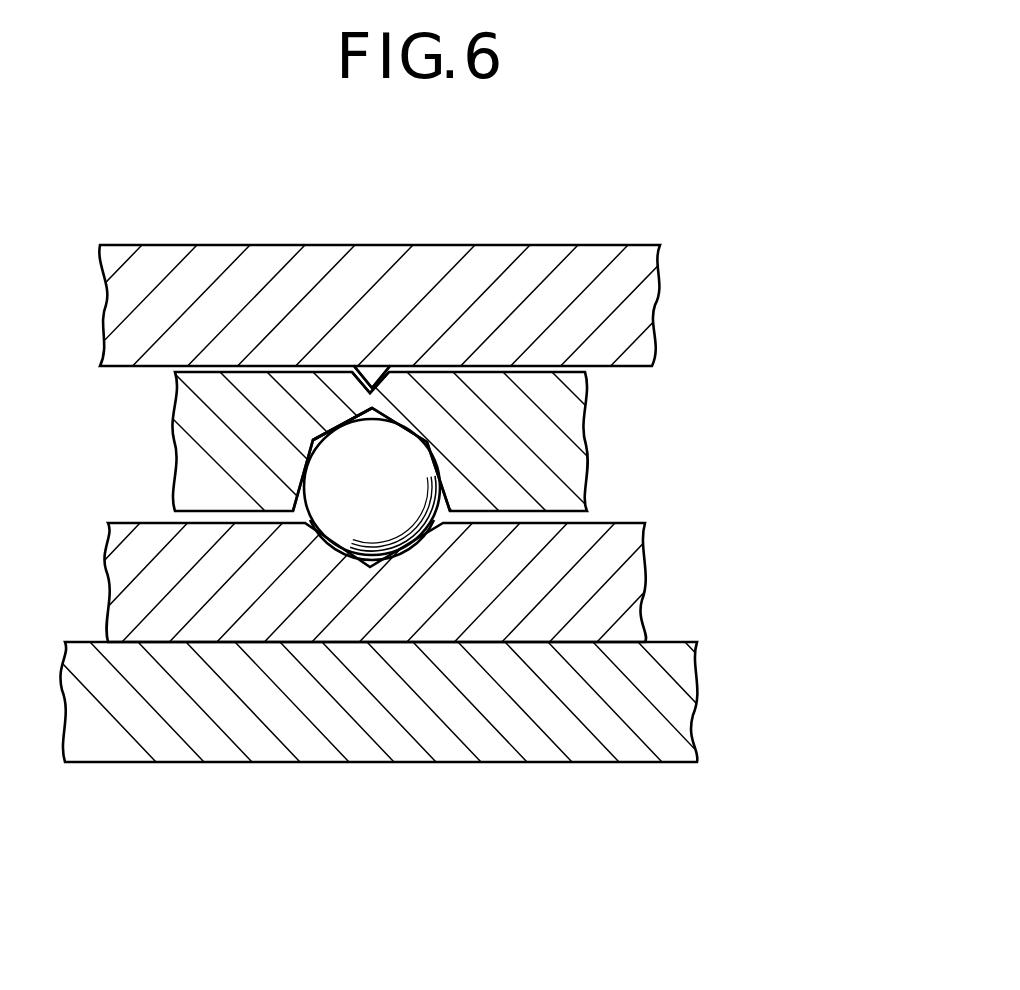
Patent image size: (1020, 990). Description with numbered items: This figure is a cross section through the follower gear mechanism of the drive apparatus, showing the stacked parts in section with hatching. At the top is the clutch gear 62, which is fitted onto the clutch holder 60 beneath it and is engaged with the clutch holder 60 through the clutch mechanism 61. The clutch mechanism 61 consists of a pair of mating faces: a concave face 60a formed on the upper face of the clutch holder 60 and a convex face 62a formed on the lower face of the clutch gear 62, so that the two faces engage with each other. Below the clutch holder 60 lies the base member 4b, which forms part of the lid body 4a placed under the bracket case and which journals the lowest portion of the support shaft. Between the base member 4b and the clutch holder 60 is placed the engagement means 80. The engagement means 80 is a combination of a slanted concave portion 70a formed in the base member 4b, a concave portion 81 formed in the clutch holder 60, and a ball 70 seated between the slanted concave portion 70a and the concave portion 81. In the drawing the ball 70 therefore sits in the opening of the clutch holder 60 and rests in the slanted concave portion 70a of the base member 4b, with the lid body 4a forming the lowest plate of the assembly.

The clutch gear 62 is at (535, 300).
The convex face 62a is at (372, 386).
The clutch mechanism 61 is at (402, 333).
The clutch holder 60 is at (537, 415).
The concave face 60a is at (362, 382).
The engagement means 80 is at (445, 478).
The concave portion 81 is at (327, 432).
The ball 70 is at (363, 492).
The slanted concave portion 70a is at (340, 538).
The base member 4b is at (593, 572).
The lid body 4a is at (567, 697).